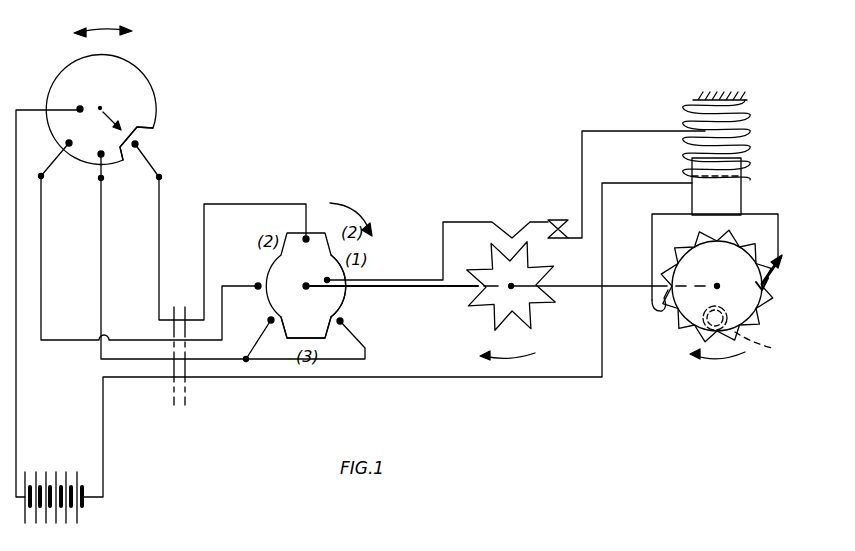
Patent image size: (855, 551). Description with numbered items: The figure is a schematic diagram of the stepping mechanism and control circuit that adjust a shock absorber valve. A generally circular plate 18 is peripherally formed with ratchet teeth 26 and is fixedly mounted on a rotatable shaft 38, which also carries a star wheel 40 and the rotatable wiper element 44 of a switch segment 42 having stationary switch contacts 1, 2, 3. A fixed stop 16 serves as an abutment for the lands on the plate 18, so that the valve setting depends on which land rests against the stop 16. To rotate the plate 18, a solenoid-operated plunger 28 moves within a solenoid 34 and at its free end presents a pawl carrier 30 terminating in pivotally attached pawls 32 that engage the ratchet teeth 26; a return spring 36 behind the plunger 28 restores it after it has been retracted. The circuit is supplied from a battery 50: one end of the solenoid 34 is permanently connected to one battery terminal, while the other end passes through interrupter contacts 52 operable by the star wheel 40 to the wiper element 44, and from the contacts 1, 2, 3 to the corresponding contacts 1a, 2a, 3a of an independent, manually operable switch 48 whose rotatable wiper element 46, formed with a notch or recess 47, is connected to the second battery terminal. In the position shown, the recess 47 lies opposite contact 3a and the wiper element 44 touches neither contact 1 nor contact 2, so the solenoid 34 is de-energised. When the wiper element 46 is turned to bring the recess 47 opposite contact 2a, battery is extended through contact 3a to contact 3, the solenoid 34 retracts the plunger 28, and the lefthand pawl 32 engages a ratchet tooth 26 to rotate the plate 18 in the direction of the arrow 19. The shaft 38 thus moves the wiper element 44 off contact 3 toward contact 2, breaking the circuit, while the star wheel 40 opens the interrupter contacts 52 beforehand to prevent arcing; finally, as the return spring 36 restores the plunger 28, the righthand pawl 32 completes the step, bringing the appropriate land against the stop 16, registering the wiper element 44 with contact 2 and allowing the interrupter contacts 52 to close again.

The stationary switch contact 1 is at (257, 283).
The stationary switch contact 2 is at (268, 320).
The stationary switch contact 3 is at (306, 238).
The switch contact 1a is at (42, 180).
The switch contact 2a is at (102, 180).
The switch contact 3a is at (160, 176).
The fixed stop 16 is at (773, 348).
The circular plate 18 is at (763, 318).
The arrow 19 is at (720, 356).
The ratchet teeth 26 is at (762, 258).
The solenoid-operated plunger 28 is at (732, 196).
The pawl carrier 30 is at (785, 252).
The pawls 32 is at (662, 312).
The solenoid 34 is at (752, 155).
The return spring 36 is at (740, 114).
The rotatable shaft 38 is at (622, 290).
The star wheel 40 is at (530, 313).
The switch segment 42 is at (343, 308).
The rotatable wiper element 44 is at (341, 292).
The rotatable wiper element 46 is at (73, 76).
The notch or recess 47 is at (153, 129).
The manually operable switch 48 is at (145, 78).
The battery 50 is at (88, 508).
The interrupter contacts 52 is at (558, 218).